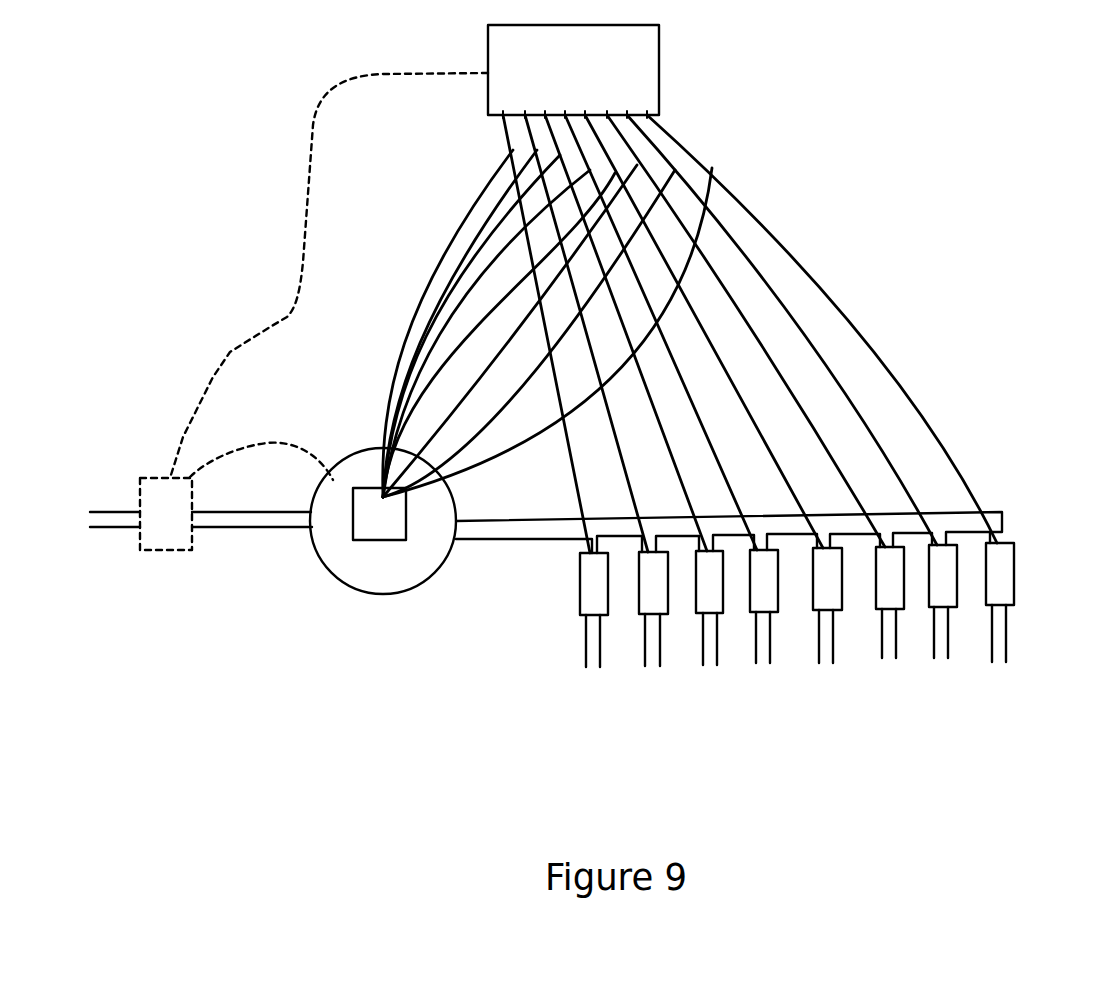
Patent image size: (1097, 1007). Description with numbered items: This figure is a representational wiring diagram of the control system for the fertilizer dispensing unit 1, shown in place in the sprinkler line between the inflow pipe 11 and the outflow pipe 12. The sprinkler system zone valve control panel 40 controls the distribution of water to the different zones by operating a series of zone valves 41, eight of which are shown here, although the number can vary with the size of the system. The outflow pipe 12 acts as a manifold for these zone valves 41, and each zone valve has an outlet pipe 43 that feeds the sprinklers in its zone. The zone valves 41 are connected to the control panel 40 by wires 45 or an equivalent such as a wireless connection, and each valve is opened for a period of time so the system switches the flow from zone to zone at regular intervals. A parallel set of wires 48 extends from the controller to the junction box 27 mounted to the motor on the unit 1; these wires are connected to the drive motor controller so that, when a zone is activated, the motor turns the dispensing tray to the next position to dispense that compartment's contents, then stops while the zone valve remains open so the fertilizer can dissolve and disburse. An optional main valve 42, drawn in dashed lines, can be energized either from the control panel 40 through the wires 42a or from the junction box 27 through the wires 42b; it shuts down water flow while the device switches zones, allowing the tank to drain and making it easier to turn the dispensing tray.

The unit 1 is at (300, 571).
The inflow pipe 11 is at (103, 507).
The outflow pipe 12 is at (490, 520).
The junction box 27 is at (385, 537).
The zone valve control panel 40 is at (641, 77).
The zone valves 41 is at (577, 607).
The main valve 42 is at (155, 553).
The wires 42a is at (293, 160).
The wires 42b is at (252, 437).
The outlet pipe 43 is at (592, 672).
The wires 45 is at (612, 445).
The parallel set of wires 48 is at (390, 343).